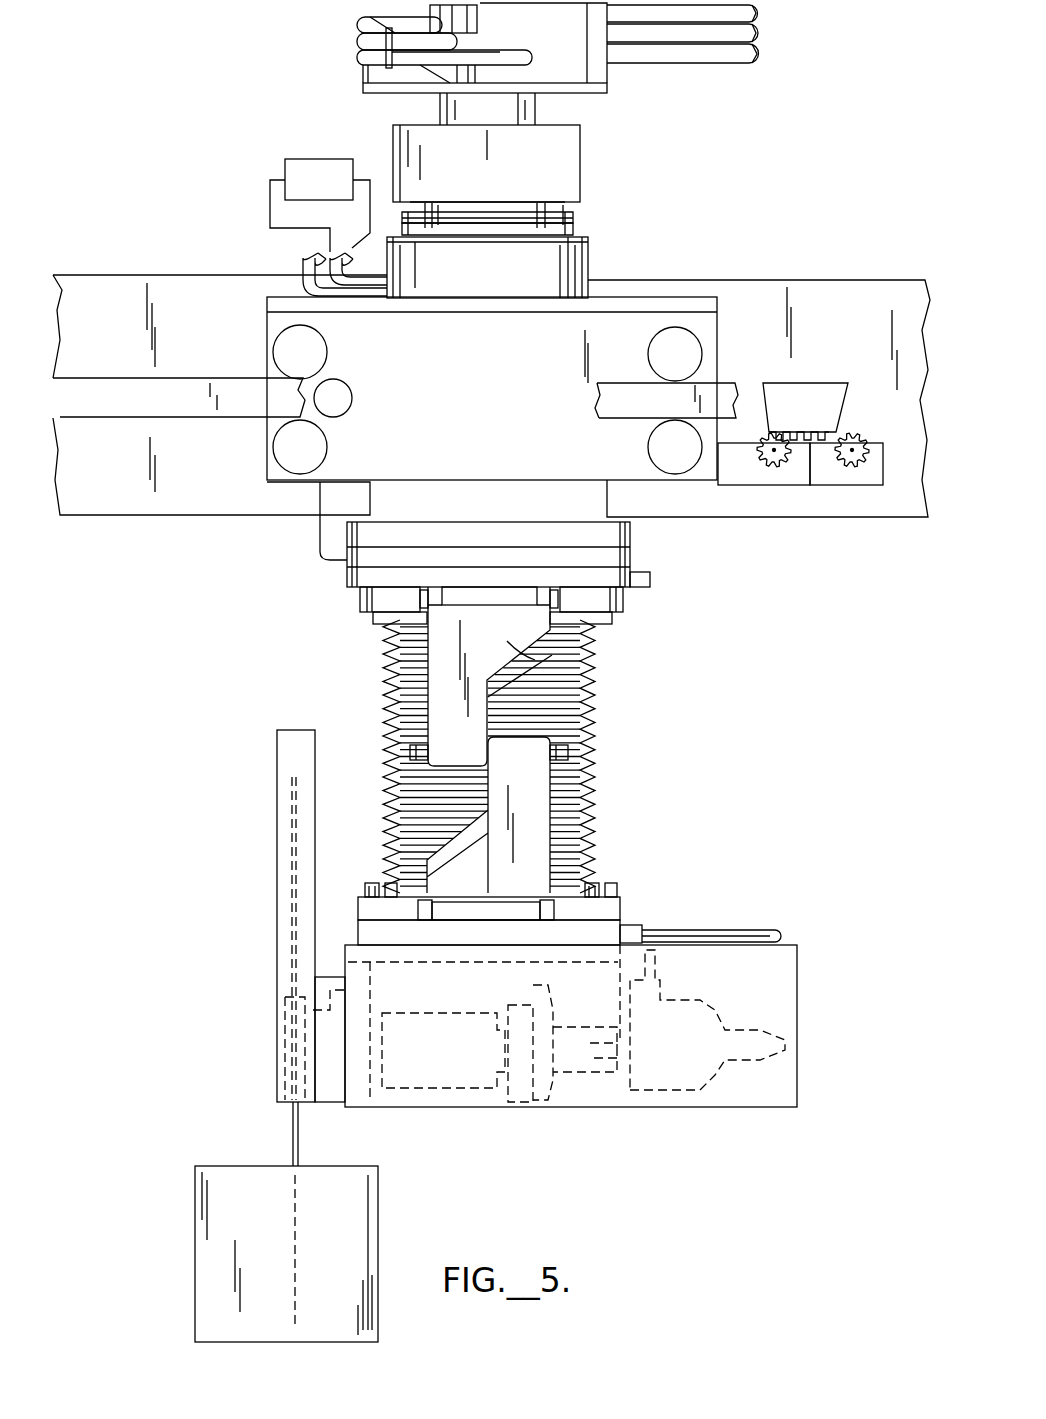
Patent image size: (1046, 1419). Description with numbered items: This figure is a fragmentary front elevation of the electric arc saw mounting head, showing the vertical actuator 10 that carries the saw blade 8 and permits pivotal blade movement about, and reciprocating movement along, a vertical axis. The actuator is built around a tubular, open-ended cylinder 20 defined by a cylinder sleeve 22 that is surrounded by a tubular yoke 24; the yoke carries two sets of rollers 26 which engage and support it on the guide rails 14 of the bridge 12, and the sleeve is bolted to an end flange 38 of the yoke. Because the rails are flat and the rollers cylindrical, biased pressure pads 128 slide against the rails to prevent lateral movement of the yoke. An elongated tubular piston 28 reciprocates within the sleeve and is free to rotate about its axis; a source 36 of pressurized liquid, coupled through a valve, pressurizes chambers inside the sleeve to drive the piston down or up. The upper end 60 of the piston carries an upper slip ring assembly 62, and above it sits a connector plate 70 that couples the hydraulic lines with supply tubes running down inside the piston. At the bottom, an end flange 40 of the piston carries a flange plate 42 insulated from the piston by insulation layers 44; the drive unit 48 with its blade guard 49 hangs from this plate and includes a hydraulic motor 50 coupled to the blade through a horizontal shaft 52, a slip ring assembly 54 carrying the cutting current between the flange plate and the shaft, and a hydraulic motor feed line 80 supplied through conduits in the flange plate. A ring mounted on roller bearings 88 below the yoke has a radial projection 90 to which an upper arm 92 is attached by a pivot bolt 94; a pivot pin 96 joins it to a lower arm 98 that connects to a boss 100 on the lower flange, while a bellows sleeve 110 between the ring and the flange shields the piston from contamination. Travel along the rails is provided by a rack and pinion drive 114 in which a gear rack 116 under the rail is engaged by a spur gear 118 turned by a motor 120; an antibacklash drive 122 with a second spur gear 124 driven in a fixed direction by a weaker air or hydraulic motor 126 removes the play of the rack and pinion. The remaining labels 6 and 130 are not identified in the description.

The reservoir / section line 6 is at (370, 1218).
The saw blade 8 is at (300, 1135).
The vertical actuator 10 is at (737, 238).
The bridge 12 is at (85, 324).
The guide rails 14 is at (83, 400).
The cylinder 20 is at (594, 263).
The cylinder sleeve 22 is at (589, 249).
The tubular yoke 24 is at (632, 322).
The rollers 26 is at (310, 350).
The piston 28 is at (575, 228).
The source of pressurized liquid 36 is at (317, 159).
The end flange 38 is at (636, 533).
The end flange 40 is at (612, 900).
The flange plate 42 is at (380, 931).
The insulation layers 44 is at (613, 918).
The drive unit 48 is at (641, 1111).
The blade guard 49 is at (318, 800).
The hydraulic motor 50 is at (680, 1085).
The horizontal shaft 52 is at (385, 1100).
The slip ring assembly 54 is at (525, 1108).
The upper end of the piston 60 is at (575, 214).
The upper slip ring assembly 62 is at (586, 157).
The connector plate 70 is at (607, 91).
The hydraulic motor feed line 80 is at (720, 930).
The roller bearings 88 is at (617, 613).
The radial projection 90 is at (497, 594).
The upper arm 92 is at (600, 661).
The pivot bolt 94 is at (560, 599).
The pivot pin 96 is at (567, 752).
The lower arm 98 is at (541, 817).
The boss 100 is at (468, 903).
The bellows sleeve 110 is at (598, 783).
The rack and pinion drive 114 is at (796, 424).
The gear rack 116 is at (812, 427).
The spur gear 118 is at (765, 463).
The motor 120 is at (793, 478).
The antibacklash drive 122 is at (861, 427).
The second spur gear 124 is at (837, 464).
The air or hydraulic motor 126 is at (873, 480).
The pressure pads 128 is at (347, 388).
The strip section 130 is at (183, 407).